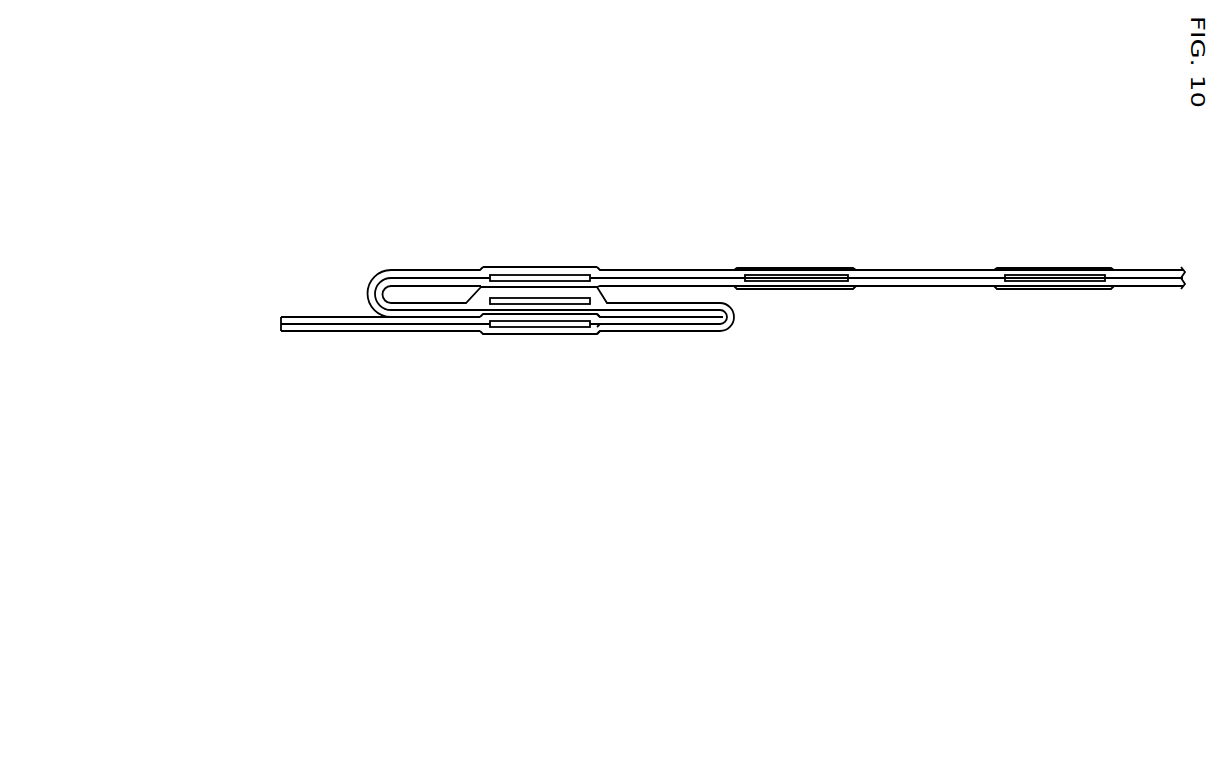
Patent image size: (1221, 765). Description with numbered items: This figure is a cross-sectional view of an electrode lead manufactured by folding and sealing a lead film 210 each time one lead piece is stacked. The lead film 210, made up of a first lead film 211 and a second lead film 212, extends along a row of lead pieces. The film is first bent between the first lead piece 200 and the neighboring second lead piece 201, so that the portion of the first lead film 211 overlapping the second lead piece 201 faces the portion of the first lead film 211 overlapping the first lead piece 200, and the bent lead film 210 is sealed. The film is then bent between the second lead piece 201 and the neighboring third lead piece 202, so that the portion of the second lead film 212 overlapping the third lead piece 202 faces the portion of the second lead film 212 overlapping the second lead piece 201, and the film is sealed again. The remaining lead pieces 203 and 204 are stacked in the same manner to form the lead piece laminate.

The first lead piece 200 is at (497, 329).
The second lead piece 201 is at (481, 304).
The third lead piece 202 is at (536, 282).
The lead piece 203 is at (832, 280).
The lead piece 204 is at (1039, 280).
The lead film 210 is at (176, 275).
The first lead film 211 is at (280, 317).
The second lead film 212 is at (280, 332).